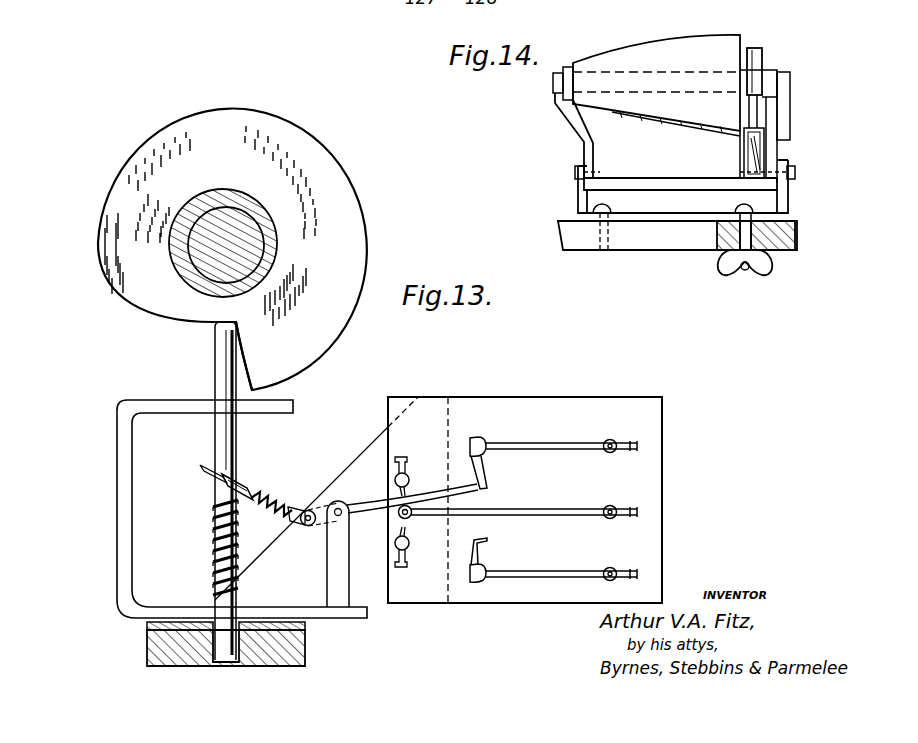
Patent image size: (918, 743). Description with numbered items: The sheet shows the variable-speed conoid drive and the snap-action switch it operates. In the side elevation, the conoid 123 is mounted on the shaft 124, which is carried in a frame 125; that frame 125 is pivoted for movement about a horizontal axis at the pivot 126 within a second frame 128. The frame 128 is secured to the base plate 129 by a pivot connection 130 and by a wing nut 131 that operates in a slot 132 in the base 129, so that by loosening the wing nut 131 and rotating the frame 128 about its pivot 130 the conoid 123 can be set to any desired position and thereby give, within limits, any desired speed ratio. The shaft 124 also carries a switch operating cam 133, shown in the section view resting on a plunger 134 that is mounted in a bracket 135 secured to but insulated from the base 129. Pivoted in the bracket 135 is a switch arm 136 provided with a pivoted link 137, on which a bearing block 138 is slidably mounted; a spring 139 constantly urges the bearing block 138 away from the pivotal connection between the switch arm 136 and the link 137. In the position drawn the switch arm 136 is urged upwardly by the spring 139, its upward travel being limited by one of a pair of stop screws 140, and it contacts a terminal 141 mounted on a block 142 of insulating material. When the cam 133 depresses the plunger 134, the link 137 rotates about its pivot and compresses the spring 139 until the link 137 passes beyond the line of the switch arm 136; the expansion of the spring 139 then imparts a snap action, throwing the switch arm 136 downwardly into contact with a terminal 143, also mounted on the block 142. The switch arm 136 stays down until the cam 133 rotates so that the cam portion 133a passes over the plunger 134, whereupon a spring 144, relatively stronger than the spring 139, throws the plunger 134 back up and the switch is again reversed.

In FIG. 14, the conoid 123 is at (707, 45).
In FIG. 13, the shaft 124 is at (217, 217).
In FIG. 14, the shaft 124 is at (680, 67).
In FIG. 14, the frame 125 is at (567, 117).
In FIG. 14, the pivot 126 is at (576, 170).
In FIG. 14, the frame 128 is at (583, 200).
In FIG. 13, the base plate 129 is at (305, 647).
In FIG. 14, the base plate 129 is at (677, 231).
In FIG. 14, the pivot connection 130 is at (610, 210).
In FIG. 14, the wing nut 131 is at (750, 273).
In FIG. 14, the slot 132 is at (797, 233).
In FIG. 13, the switch operating cam 133 is at (288, 115).
In FIG. 14, the switch operating cam 133 is at (755, 48).
In FIG. 13, the cam portion 133a is at (253, 383).
In FIG. 13, the plunger 134 is at (237, 428).
In FIG. 14, the plunger 134 is at (768, 127).
In FIG. 13, the bracket 135 is at (117, 470).
In FIG. 13, the switch arm 136 is at (362, 505).
In FIG. 13, the link 137 is at (304, 511).
In FIG. 13, the bearing block 138 is at (249, 487).
In FIG. 13, the spring 139 is at (278, 493).
In FIG. 13, the stop screws 140 is at (400, 458).
In FIG. 13, the terminal 141 is at (483, 470).
In FIG. 13, the block of insulating material 142 is at (525, 500).
In FIG. 13, the terminal 143 is at (490, 540).
In FIG. 13, the spring 144 is at (213, 525).